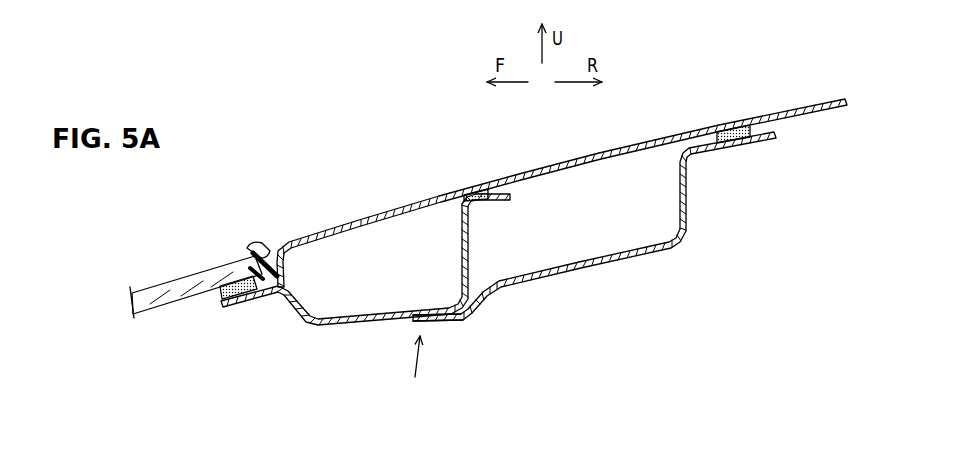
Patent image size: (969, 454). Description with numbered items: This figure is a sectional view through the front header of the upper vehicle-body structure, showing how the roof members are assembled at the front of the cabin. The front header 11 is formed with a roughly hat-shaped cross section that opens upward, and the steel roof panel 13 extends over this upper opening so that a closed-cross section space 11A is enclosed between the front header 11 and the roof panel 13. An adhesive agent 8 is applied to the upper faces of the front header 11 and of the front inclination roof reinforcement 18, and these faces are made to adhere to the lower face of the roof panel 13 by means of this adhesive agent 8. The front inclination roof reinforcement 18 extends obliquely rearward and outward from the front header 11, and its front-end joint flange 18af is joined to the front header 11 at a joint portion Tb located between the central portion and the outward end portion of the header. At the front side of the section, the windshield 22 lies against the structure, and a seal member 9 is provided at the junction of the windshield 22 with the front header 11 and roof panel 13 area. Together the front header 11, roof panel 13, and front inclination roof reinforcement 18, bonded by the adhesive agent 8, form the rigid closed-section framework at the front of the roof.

The adhesive agent 8 is at (216, 291).
The seal member 9 is at (256, 246).
The front header 11 is at (362, 321).
The closed-cross section space 11A is at (356, 285).
The roof panel 13 is at (378, 210).
The front inclination roof reinforcement 18 is at (616, 262).
The front-end joint flange 18af is at (430, 321).
The windshield 22 is at (207, 271).
The joint portion Tb is at (416, 370).